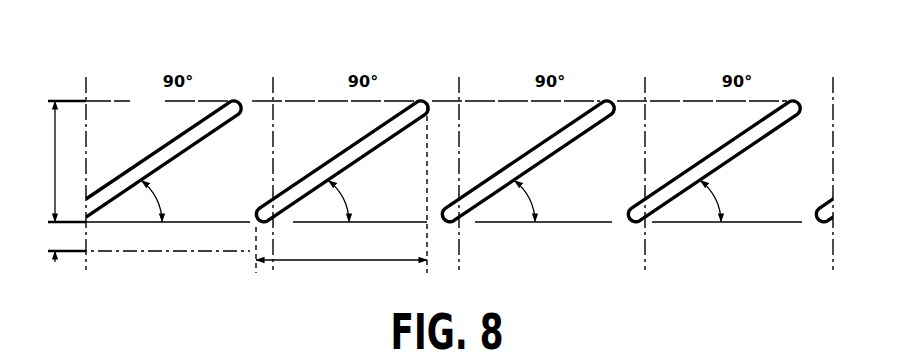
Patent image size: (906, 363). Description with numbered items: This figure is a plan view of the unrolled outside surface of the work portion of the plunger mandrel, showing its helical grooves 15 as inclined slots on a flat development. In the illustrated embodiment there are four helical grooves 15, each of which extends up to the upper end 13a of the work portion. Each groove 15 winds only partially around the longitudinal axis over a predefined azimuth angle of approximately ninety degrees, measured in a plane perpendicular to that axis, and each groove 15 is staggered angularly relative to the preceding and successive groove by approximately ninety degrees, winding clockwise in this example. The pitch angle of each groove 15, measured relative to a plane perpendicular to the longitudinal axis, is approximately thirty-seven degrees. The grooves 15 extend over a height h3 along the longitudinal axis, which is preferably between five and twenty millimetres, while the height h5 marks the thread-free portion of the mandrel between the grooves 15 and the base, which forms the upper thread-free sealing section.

The upper end of the work portion 13a is at (473, 101).
The helical groove 15 is at (69, 167).
The height of the ribs or grooves h3 is at (56, 161).
The height of the upper thread-free sealing section h5 is at (138, 247).